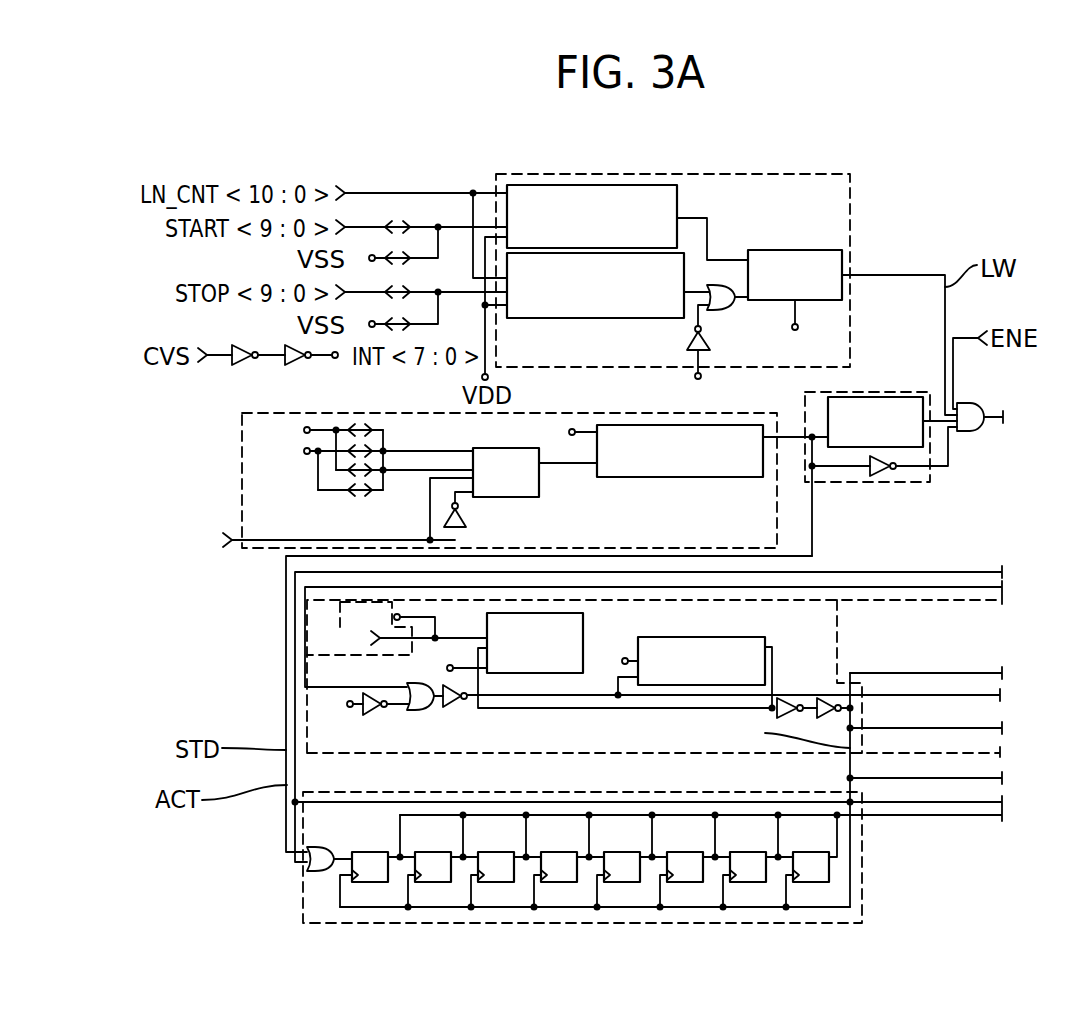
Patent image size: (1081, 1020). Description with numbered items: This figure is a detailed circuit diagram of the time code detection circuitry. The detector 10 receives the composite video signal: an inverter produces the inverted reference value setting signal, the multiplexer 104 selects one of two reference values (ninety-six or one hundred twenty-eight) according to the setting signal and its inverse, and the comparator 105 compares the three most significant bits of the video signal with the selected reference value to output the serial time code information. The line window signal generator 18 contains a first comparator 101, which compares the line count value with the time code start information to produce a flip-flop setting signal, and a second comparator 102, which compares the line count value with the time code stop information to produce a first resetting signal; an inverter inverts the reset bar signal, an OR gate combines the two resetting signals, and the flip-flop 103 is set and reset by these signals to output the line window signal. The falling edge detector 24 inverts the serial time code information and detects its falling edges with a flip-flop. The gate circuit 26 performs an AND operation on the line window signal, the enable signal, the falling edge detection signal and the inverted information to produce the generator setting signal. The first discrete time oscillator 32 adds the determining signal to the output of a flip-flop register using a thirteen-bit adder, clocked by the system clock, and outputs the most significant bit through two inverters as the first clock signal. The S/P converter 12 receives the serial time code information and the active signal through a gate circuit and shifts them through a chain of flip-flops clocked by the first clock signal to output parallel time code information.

The line window signal generator 18 is at (694, 271).
The first comparator 101 is at (677, 210).
The second comparator 102 is at (684, 270).
The flip-flop 103 is at (842, 253).
The falling edge detector 24 is at (882, 392).
The gate circuit 26 is at (993, 409).
The detector 10 is at (491, 469).
The multiplexer 104 is at (539, 478).
The comparator 105 is at (722, 477).
The first discrete time oscillator 32 is at (305, 723).
The S/P converter 12 is at (862, 890).